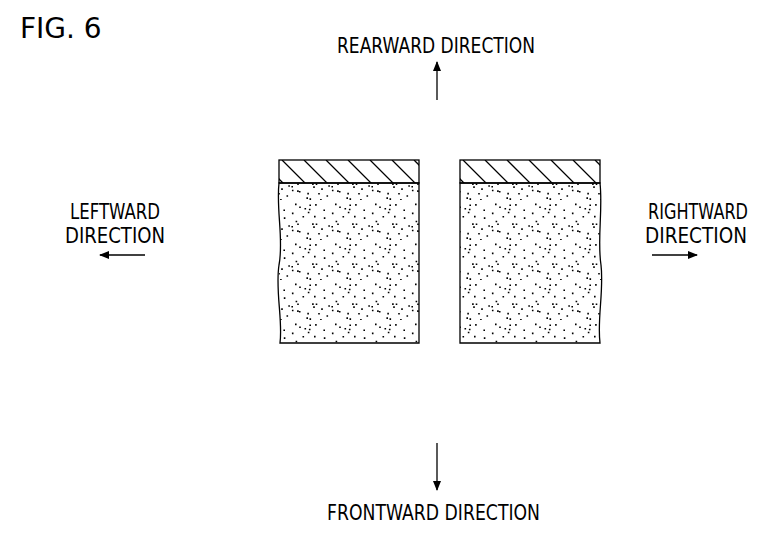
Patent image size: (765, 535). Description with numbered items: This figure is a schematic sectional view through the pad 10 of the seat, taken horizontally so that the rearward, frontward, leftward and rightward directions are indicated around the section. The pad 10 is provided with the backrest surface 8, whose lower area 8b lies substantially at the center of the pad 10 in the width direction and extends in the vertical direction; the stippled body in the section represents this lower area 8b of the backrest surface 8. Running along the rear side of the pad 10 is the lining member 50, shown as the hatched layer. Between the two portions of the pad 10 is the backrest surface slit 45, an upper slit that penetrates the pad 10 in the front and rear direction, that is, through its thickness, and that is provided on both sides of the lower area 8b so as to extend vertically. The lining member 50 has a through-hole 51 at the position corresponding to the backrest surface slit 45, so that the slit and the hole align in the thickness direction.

The pad 10 is at (278, 409).
The backrest surface 8 is at (392, 266).
The lower area 8b is at (305, 288).
The lining member 50 is at (294, 170).
The through-hole 51 is at (432, 165).
The backrest surface slit 45 is at (460, 305).